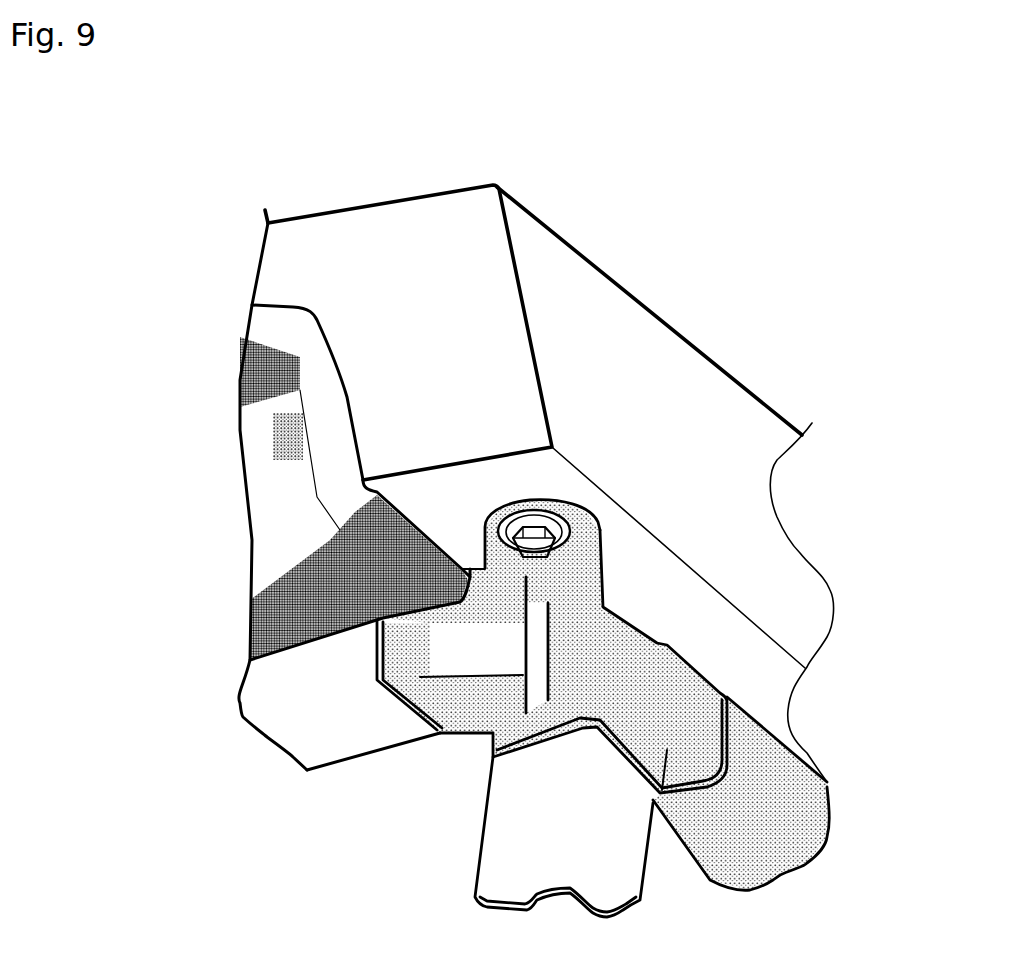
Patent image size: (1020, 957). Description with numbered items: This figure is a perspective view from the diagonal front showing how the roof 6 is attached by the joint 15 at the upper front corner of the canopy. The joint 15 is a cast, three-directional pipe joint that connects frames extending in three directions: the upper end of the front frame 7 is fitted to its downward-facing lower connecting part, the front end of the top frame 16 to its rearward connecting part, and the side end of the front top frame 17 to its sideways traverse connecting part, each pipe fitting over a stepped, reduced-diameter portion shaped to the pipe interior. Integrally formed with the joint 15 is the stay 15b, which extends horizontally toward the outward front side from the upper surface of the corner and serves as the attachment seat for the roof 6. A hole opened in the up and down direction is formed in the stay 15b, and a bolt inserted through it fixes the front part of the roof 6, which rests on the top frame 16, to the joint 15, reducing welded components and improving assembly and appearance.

The roof 6 is at (408, 217).
The front frame 7 is at (493, 820).
The joint 15 is at (552, 653).
The stay 15b is at (587, 545).
The top frame 16 is at (813, 807).
The front top frame 17 is at (300, 733).